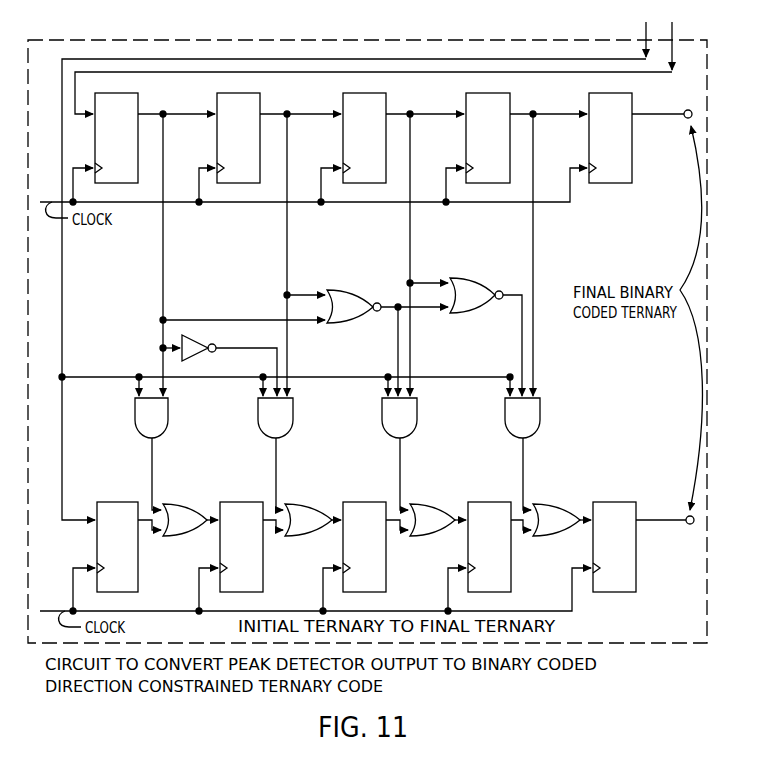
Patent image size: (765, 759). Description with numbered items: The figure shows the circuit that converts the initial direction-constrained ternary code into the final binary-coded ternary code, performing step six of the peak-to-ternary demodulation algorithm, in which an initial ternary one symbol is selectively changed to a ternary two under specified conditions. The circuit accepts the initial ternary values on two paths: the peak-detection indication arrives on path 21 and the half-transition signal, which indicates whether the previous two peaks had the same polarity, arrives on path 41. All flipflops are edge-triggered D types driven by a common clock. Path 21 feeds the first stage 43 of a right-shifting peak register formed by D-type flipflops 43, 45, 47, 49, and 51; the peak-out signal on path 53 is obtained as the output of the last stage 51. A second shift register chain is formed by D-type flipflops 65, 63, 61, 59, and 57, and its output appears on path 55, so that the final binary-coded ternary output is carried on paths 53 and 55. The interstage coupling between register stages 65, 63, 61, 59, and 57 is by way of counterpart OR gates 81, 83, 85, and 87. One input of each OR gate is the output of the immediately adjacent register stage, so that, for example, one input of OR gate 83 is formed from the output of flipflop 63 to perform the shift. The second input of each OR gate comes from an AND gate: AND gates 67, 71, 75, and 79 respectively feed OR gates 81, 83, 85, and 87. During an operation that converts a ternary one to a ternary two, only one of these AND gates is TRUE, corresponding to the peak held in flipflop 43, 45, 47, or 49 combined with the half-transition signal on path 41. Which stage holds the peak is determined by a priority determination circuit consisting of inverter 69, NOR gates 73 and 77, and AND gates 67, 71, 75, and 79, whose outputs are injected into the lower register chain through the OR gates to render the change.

The path 21 is at (73, 110).
The path 41 is at (62, 71).
The D-type flipflop 43 is at (131, 96).
The D-type flipflop 45 is at (253, 96).
The D-type flipflop 47 is at (379, 96).
The D-type flipflop 49 is at (502, 96).
The D-type flipflop 51 is at (594, 94).
The path 53 is at (683, 124).
The path 55 is at (685, 514).
The D-type flipflop 57 is at (617, 502).
The D-type flipflop 59 is at (490, 502).
The D-type flipflop 61 is at (367, 502).
The D-type flipflop 63 is at (244, 502).
The D-type flipflop 65 is at (118, 502).
The AND gate 67 is at (170, 418).
The inverter 69 is at (213, 344).
The AND gate 71 is at (295, 418).
The NOR gate 73 is at (350, 290).
The AND gate 75 is at (419, 418).
The NOR gate 77 is at (476, 279).
The AND gate 79 is at (542, 418).
The OR gate 81 is at (180, 502).
The OR gate 83 is at (305, 502).
The OR gate 85 is at (428, 502).
The OR gate 87 is at (551, 502).